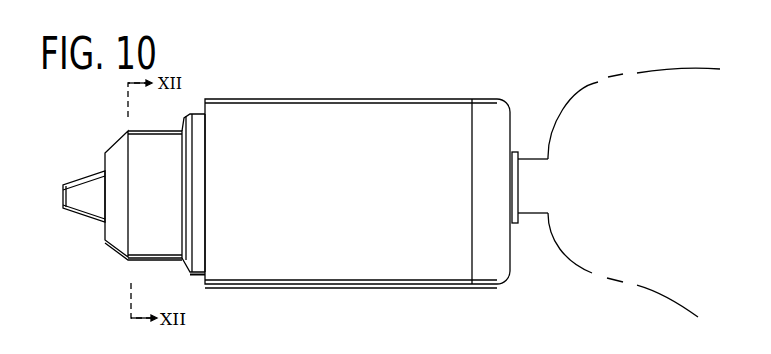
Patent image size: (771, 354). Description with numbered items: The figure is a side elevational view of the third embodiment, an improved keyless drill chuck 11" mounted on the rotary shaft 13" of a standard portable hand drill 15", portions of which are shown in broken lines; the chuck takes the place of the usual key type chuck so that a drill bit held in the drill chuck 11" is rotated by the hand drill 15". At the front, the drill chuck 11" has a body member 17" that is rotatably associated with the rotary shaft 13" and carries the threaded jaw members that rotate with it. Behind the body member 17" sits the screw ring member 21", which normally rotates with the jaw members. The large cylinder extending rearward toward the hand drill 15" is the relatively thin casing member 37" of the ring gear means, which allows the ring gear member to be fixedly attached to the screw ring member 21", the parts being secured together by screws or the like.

The keyless drill chuck 11 is at (154, 221).
The rotary shaft 13 is at (527, 198).
The portable hand drill 15 is at (667, 287).
The body member 17 is at (162, 242).
The screw ring member 21 is at (198, 260).
The casing member 37 is at (355, 262).